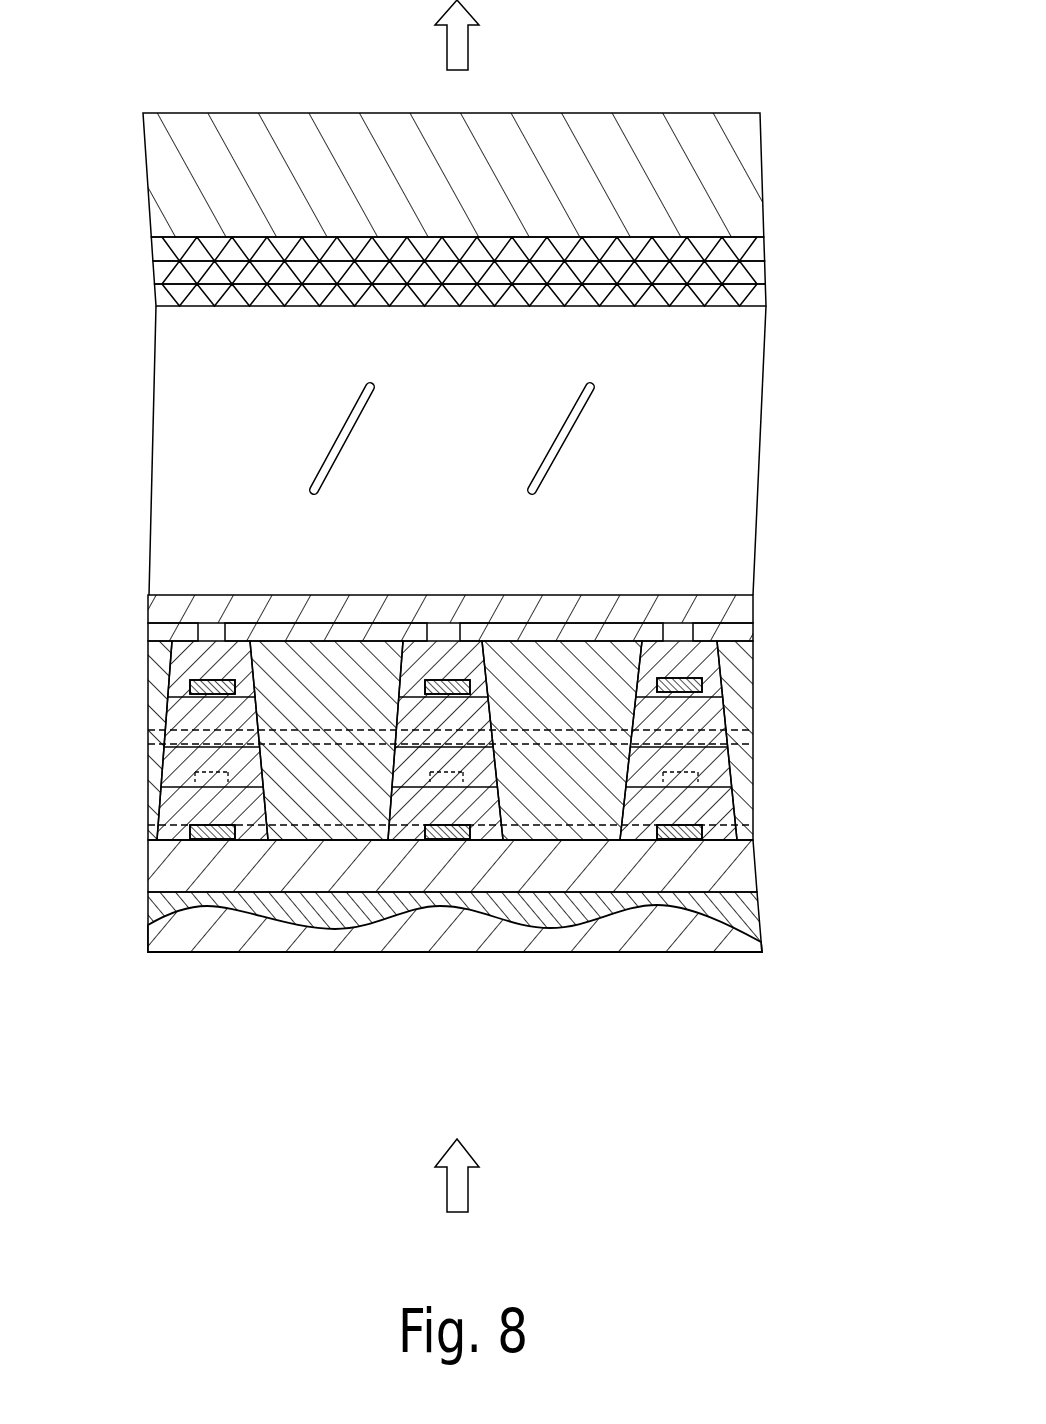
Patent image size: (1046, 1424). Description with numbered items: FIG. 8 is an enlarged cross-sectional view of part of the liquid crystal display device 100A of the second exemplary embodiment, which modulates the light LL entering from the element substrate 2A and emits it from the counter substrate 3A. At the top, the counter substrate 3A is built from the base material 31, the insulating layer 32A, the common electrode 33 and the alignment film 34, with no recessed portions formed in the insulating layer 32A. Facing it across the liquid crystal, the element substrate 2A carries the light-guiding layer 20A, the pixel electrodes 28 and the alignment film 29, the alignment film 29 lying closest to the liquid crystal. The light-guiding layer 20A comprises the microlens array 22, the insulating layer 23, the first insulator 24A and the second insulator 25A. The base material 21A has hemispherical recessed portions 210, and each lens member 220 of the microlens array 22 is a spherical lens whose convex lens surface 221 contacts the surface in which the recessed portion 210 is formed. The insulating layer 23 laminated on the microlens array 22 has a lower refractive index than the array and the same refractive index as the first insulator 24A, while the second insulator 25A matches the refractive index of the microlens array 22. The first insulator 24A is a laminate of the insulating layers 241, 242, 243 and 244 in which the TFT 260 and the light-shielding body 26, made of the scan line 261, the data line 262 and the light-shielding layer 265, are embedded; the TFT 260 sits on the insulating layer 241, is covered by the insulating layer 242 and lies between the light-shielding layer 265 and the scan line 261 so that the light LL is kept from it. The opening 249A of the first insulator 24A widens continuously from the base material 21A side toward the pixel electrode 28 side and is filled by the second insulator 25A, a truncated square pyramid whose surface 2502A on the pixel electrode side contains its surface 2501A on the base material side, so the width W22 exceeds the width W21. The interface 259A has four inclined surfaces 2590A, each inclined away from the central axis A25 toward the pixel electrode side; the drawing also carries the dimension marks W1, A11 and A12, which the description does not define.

The liquid crystal display device 100A is at (789, 56).
The counter substrate 3A is at (740, 110).
The base material 31 is at (730, 172).
The insulating layer 32A is at (732, 247).
The common electrode 33 is at (730, 265).
The alignment film 34 is at (730, 297).
The element substrate 2A is at (758, 591).
The alignment film 29 is at (745, 612).
The pixel electrode 28 is at (240, 638).
The surface of the second insulator on the pixel electrode side 2502A is at (572, 640).
The light-guiding layer 20A is at (759, 645).
The second insulator 25A is at (270, 672).
The first insulator 24A is at (521, 740).
The insulating layer 244 is at (706, 678).
The insulating layer 243 is at (735, 727).
The insulating layer 242 is at (738, 767).
The insulating layer 241 is at (488, 823).
The light-shielding body 26 is at (392, 758).
The data line 262 is at (177, 697).
The scan line 261 is at (150, 749).
The light-shielding layer 265 is at (418, 821).
The TFT 260 is at (228, 782).
The opening 249A is at (492, 697).
The insulating layer 23 is at (742, 865).
The microlens array 22 is at (753, 903).
The base material 21A is at (753, 940).
The recessed portion 210 is at (640, 910).
The lens member 220 is at (497, 910).
The convex lens surface 221 is at (628, 918).
The surface of the second insulator on the base material side 2501A is at (573, 840).
The inclined surface 2590A is at (282, 822).
The interface 259A is at (247, 1010).
The region width A11 is at (237, 842).
The region width A12 is at (422, 842).
The width of surface 2501A W21 is at (622, 957).
The width of surface 2502A W22 is at (483, 965).
The width W1 is at (470, 985).
The central axis A25 is at (328, 1123).
The light LL is at (469, 48).